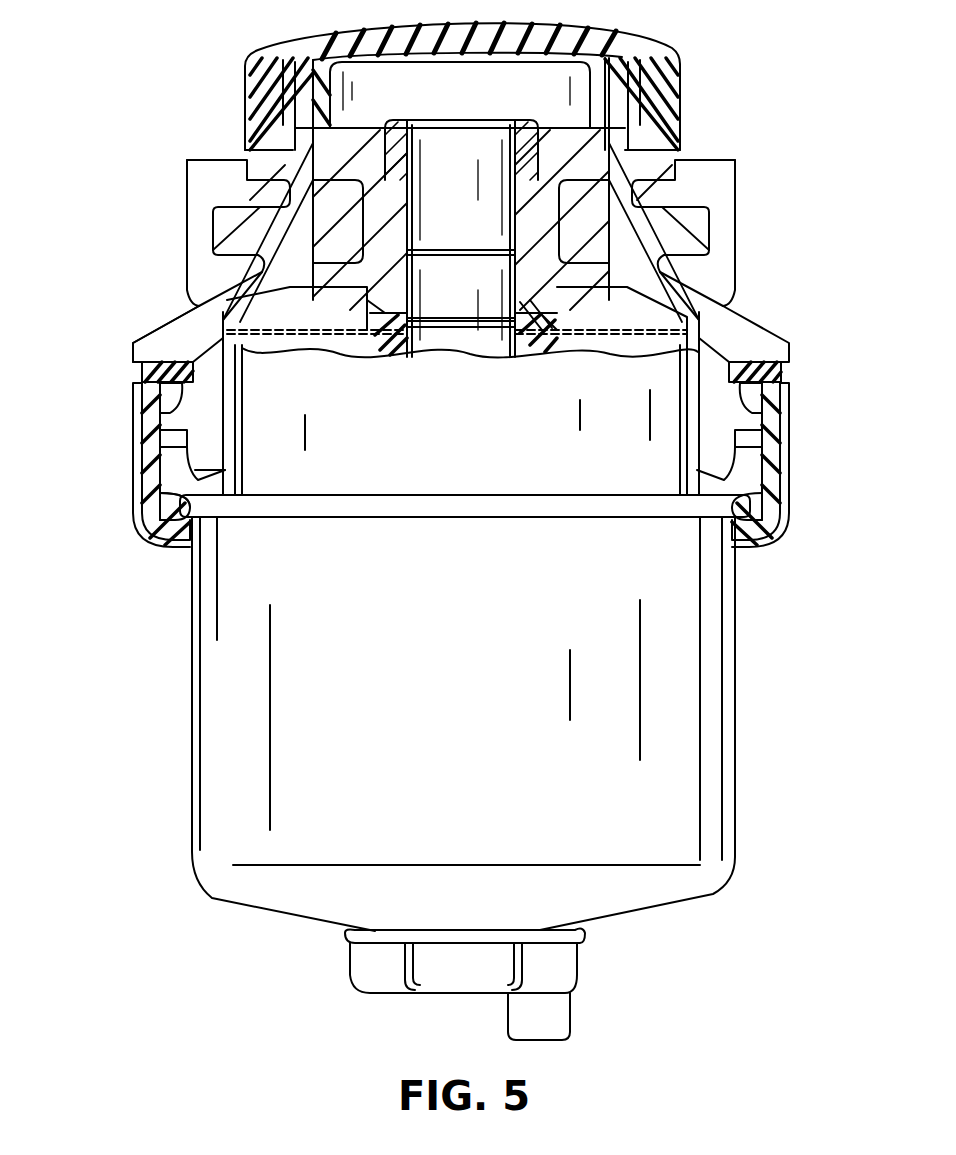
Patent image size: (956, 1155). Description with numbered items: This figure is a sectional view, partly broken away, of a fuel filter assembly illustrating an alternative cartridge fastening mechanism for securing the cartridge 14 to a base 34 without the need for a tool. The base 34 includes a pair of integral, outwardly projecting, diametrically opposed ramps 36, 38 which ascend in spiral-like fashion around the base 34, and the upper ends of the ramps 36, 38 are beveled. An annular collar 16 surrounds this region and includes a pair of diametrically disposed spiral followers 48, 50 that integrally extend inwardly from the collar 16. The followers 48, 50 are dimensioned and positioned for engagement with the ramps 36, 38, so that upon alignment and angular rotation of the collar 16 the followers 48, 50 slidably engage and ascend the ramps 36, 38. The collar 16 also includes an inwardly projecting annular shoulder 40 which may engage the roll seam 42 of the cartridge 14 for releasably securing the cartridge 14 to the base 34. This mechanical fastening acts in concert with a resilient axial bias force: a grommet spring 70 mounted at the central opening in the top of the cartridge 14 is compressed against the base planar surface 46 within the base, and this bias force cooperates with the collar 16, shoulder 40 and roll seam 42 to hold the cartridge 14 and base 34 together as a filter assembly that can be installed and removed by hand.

The cartridge 14 is at (712, 714).
The annular collar 16 is at (162, 550).
The base 34 is at (163, 330).
The ramp 36 is at (143, 460).
The ramp 38 is at (752, 450).
The annular shoulder 40 is at (765, 508).
The roll seam 42 is at (143, 490).
The base planar surface 46 is at (397, 300).
The spiral follower 48 is at (143, 398).
The spiral follower 50 is at (787, 397).
The grommet spring 70 is at (555, 322).